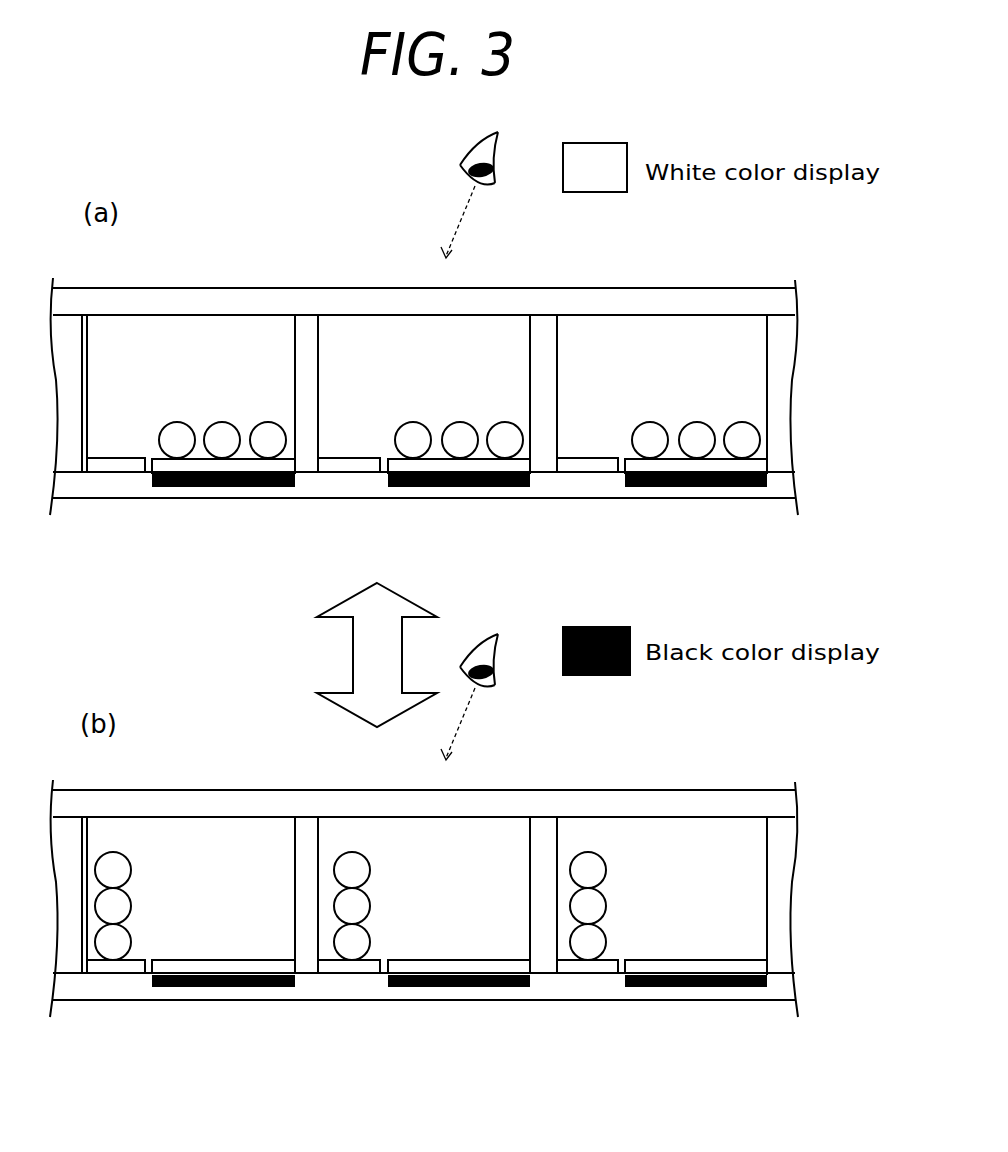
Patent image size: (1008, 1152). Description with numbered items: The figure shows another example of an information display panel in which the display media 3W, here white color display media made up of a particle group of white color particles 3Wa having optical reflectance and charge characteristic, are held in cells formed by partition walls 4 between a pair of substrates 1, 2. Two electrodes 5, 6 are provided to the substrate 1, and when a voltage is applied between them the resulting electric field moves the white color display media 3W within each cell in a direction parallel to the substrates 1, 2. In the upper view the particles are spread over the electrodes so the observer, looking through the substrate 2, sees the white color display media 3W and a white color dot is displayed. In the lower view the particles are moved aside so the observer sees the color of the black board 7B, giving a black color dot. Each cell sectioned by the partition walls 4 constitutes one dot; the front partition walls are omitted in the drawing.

The substrate 1 is at (588, 487).
The substrate 2 is at (663, 301).
The white color display media 3W is at (825, 422).
The white color particle 3Wa is at (413, 435).
The partition wall 4 is at (70, 442).
The electrode 5 is at (115, 466).
The electrode 6 is at (193, 466).
The black board 7B is at (233, 486).